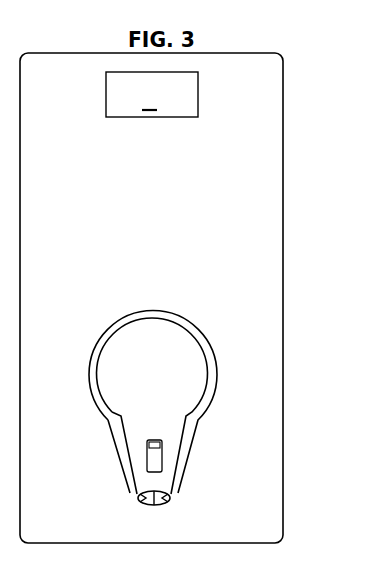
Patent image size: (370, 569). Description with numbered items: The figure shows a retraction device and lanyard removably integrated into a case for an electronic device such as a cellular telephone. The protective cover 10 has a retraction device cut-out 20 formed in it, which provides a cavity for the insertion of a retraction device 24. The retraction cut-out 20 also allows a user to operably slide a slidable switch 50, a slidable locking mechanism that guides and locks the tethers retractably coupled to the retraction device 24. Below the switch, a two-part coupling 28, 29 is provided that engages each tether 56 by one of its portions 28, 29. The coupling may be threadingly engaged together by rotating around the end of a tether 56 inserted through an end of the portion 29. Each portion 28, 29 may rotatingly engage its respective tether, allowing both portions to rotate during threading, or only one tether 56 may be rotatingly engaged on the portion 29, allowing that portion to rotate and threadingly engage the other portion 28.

The protective cover 10 is at (283, 82).
The retraction device cut-out 20 is at (200, 331).
The retraction device 24 is at (211, 400).
The slidable switch 50 is at (155, 453).
The coupling portion 28 is at (176, 495).
The coupling portion 29 is at (146, 502).
The tether 56 is at (138, 497).